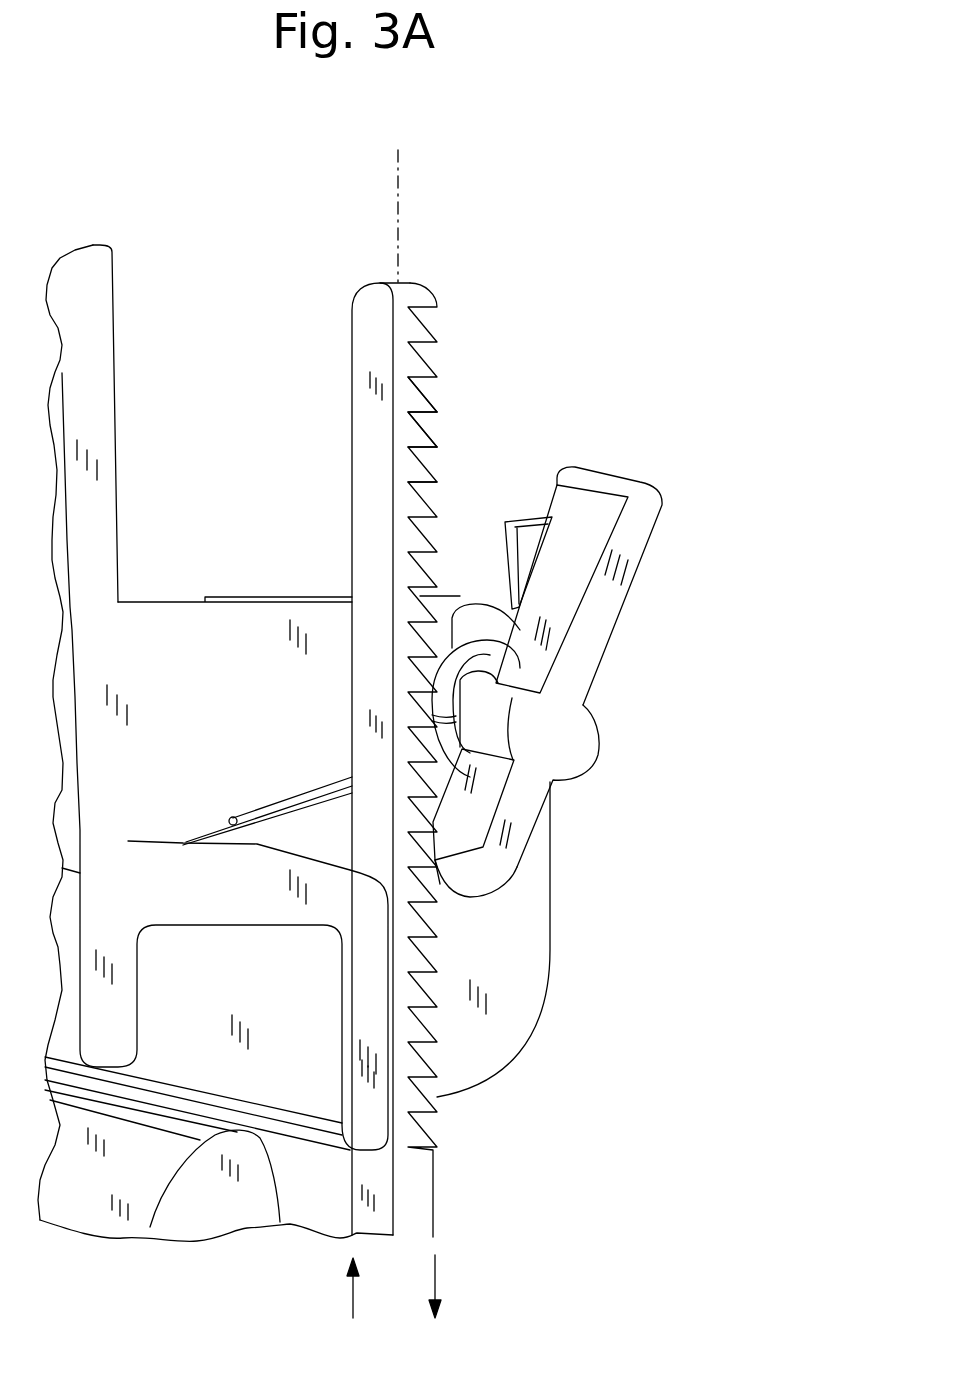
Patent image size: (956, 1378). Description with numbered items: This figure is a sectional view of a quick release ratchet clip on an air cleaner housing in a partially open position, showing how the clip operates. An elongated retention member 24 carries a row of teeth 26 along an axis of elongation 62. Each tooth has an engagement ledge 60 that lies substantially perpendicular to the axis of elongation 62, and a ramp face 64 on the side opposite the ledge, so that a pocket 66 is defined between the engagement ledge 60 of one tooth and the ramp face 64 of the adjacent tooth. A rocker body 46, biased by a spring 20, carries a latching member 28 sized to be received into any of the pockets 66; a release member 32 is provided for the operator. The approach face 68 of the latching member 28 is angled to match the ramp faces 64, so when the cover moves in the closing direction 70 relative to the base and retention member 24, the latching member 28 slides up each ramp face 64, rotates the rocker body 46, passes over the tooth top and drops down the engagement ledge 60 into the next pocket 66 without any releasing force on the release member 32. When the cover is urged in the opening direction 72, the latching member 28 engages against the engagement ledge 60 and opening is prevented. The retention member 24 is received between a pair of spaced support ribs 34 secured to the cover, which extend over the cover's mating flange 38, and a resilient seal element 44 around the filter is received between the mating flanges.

The spring 20 is at (453, 650).
The elongated retention member 24 is at (370, 337).
The teeth 26 is at (428, 328).
The latching member 28 is at (455, 872).
The release member 32 is at (657, 490).
The support ribs 34 is at (247, 708).
The mating flange 38 is at (270, 986).
The resilient seal element 44 is at (242, 1216).
The rocker body 46 is at (583, 650).
The engagement ledge 60 is at (428, 415).
The axis of elongation 62 is at (400, 205).
The ramp faces 64 is at (428, 400).
The pocket 66 is at (430, 500).
The approach face 68 is at (440, 884).
The closing direction 70 is at (437, 1272).
The opening direction 72 is at (352, 1300).